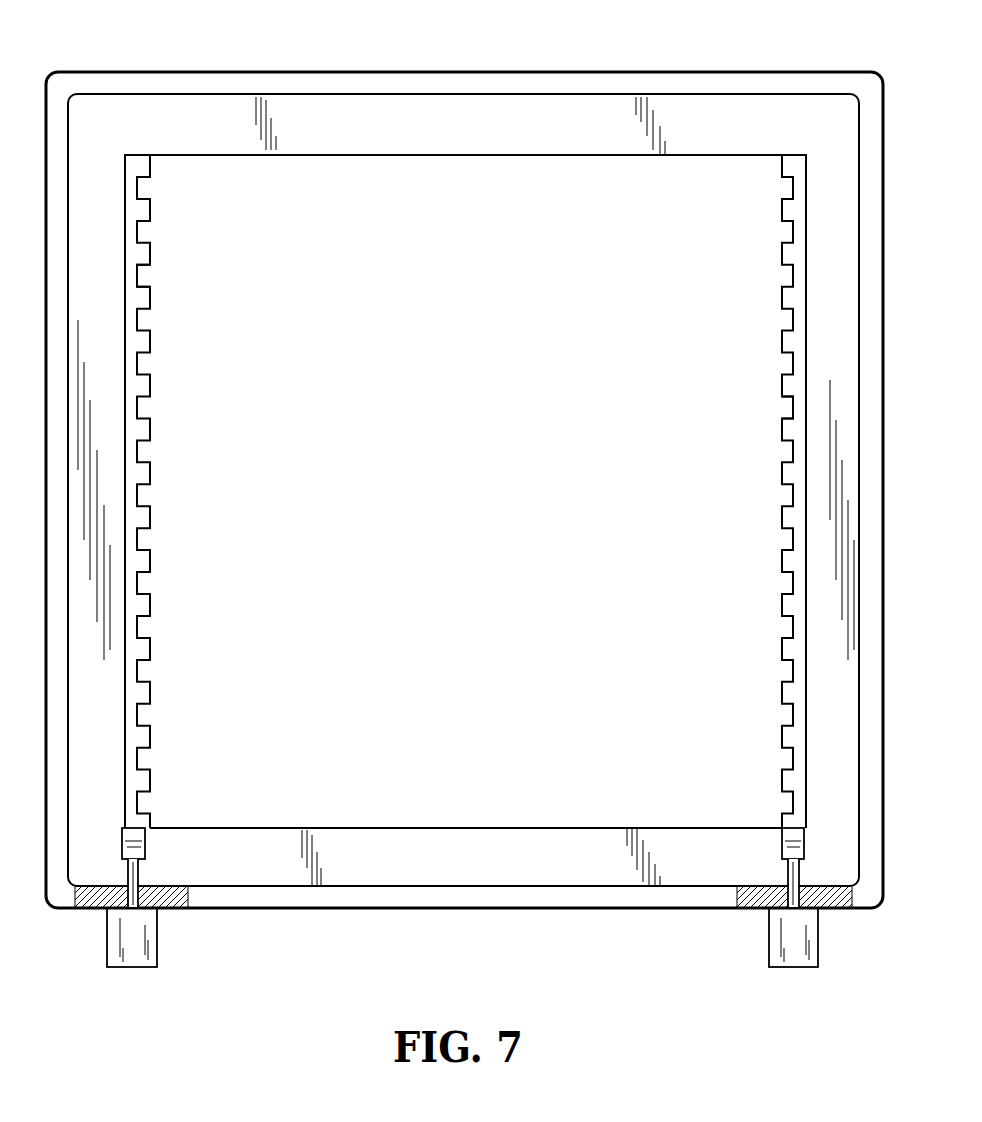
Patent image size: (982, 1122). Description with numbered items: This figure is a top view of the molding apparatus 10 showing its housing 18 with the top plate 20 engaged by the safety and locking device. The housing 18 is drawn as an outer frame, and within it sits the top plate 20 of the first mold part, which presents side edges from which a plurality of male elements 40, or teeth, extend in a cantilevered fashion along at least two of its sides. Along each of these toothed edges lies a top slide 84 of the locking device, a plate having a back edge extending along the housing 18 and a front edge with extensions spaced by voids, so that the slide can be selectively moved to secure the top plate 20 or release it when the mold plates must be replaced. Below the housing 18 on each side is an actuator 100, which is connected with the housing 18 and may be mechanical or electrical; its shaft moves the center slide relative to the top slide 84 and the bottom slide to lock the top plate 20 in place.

The molding apparatus 10 is at (440, 60).
The housing 18 is at (147, 87).
The top plate 20 is at (466, 516).
The male elements 40 is at (147, 275).
The top slide 84 is at (131, 690).
The actuator 100 is at (135, 952).